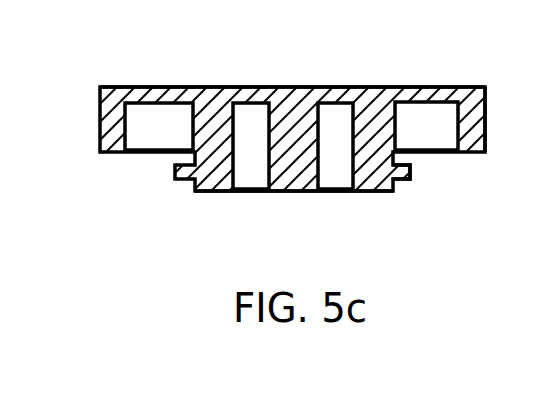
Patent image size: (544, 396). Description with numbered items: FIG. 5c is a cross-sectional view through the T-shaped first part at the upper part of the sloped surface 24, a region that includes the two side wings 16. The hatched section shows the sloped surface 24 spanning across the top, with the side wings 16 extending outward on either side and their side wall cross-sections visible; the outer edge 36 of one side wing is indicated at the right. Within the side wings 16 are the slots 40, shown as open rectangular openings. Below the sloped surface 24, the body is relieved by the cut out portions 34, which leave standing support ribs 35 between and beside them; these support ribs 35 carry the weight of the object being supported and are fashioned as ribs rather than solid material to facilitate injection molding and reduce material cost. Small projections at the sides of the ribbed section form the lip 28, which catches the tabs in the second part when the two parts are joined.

The side wing 16 is at (307, 55).
The sloped surface 24 is at (292, 115).
The lip 28 is at (434, 184).
The cut out portion 34 is at (306, 179).
The support rib 35 is at (321, 238).
The side edge 36 is at (512, 119).
The slot 40 is at (281, 116).